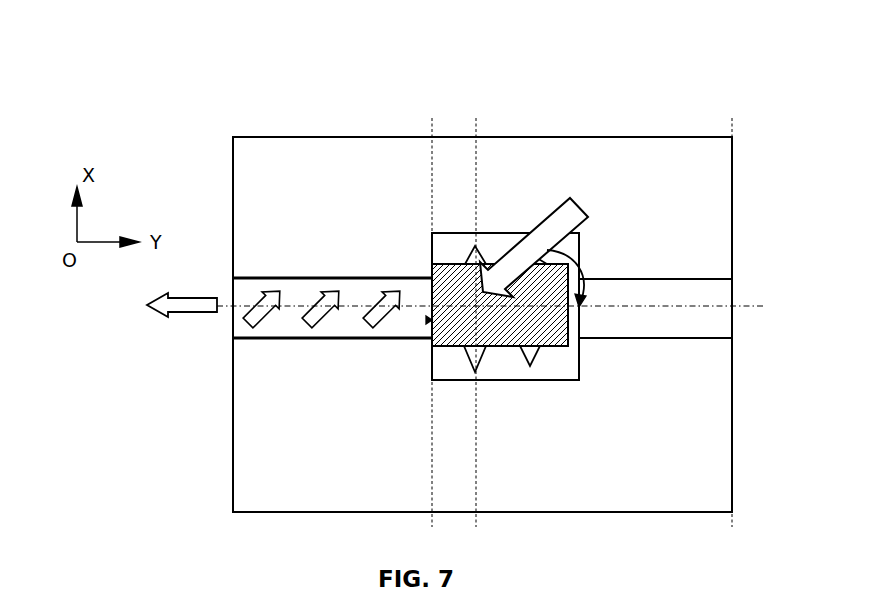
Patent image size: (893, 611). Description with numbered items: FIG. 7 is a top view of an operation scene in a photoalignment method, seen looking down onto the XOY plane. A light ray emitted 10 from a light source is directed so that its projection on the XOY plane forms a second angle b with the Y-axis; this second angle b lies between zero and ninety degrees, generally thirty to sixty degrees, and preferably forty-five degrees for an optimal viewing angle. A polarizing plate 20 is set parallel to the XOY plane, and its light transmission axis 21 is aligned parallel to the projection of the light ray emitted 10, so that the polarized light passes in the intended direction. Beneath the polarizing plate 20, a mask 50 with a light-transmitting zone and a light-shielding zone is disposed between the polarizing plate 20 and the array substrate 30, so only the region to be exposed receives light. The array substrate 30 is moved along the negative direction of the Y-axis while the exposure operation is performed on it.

The light ray emitted 10 is at (562, 220).
The polarizing plate 20 is at (437, 232).
The light transmission axis 21 is at (458, 290).
The array substrate 30 is at (328, 200).
The mask 50 is at (502, 247).
The second angle b is at (578, 278).